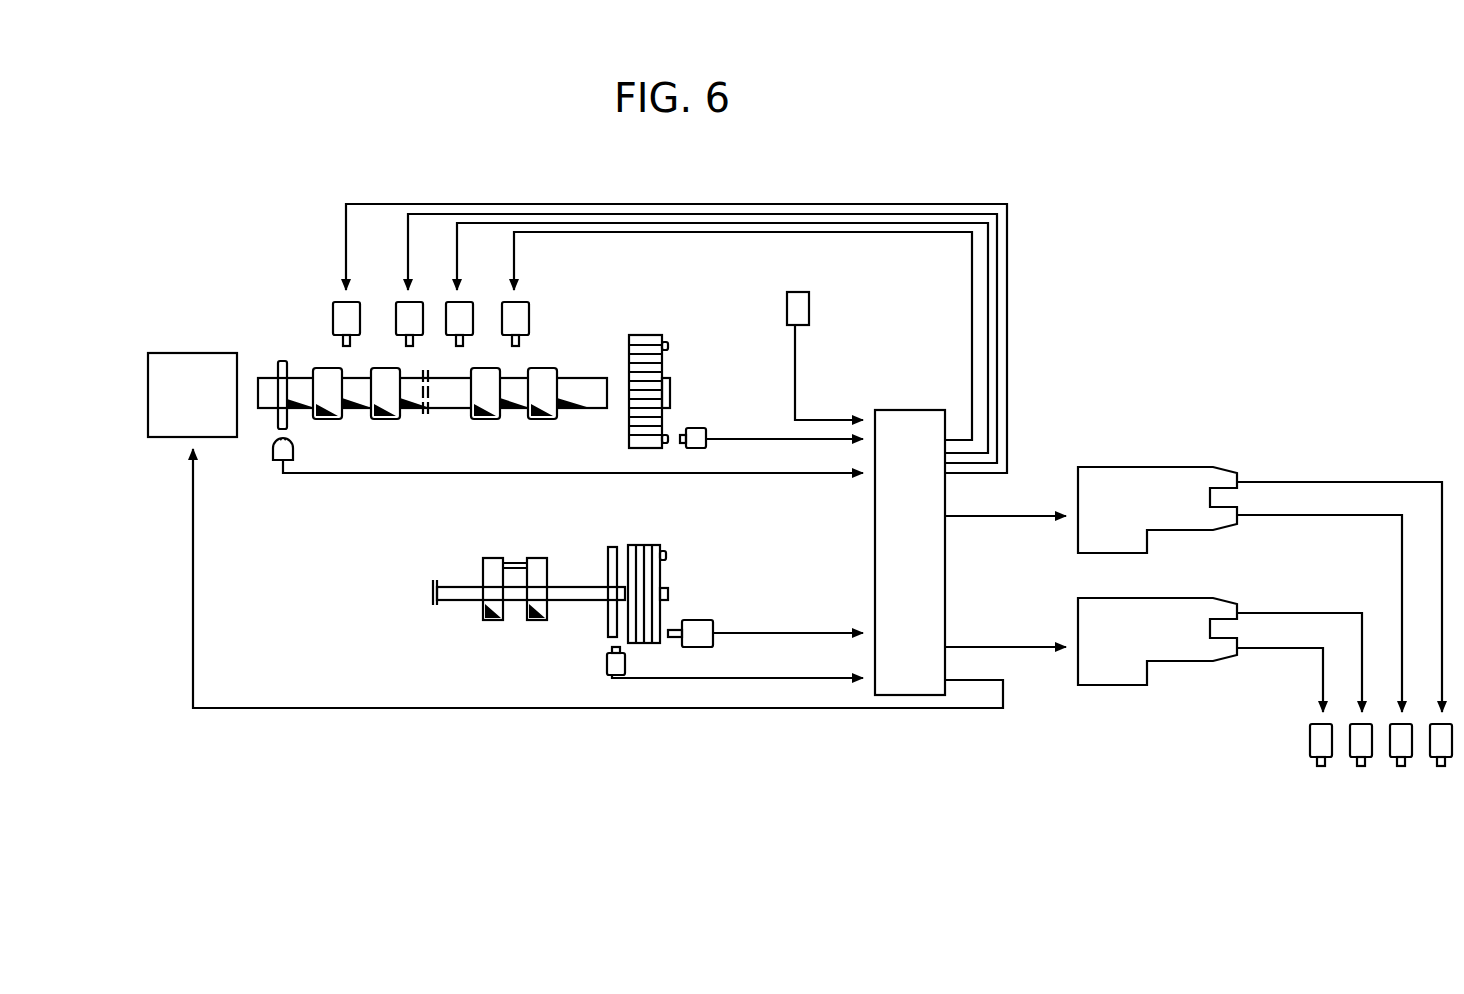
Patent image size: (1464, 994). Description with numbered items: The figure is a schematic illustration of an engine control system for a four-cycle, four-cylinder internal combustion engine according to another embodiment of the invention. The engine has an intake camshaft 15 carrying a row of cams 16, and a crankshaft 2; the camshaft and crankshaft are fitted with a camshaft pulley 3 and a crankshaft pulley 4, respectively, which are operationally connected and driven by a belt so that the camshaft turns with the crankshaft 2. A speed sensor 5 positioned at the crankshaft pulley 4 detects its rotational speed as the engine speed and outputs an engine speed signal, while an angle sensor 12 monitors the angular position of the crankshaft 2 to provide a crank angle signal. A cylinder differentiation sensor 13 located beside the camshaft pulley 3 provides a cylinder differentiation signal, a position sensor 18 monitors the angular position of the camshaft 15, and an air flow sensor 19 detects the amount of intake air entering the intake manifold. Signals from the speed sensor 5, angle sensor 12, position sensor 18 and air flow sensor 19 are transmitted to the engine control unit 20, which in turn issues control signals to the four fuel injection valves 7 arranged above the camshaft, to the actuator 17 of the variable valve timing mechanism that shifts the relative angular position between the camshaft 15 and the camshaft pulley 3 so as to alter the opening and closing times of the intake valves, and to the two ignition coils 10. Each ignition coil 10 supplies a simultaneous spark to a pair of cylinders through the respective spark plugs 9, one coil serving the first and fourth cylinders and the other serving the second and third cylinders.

The crankshaft 2 is at (568, 587).
The camshaft pulley 3 is at (662, 335).
The crankshaft pulley 4 is at (660, 545).
The speed sensor 5 is at (710, 620).
The fuel injection valves 7 is at (352, 300).
The ignition spark plugs 9 is at (1312, 746).
The ignition coils 10 is at (1107, 467).
The angle sensor 12 is at (607, 665).
The cylinder differentiation sensor 13 is at (706, 430).
The camshaft 15 is at (580, 378).
The cams 16 is at (313, 368).
The actuator 17 is at (190, 353).
The position sensor 18 is at (273, 456).
The air flow sensor 19 is at (809, 305).
The engine control unit (ECU) 20 is at (880, 410).